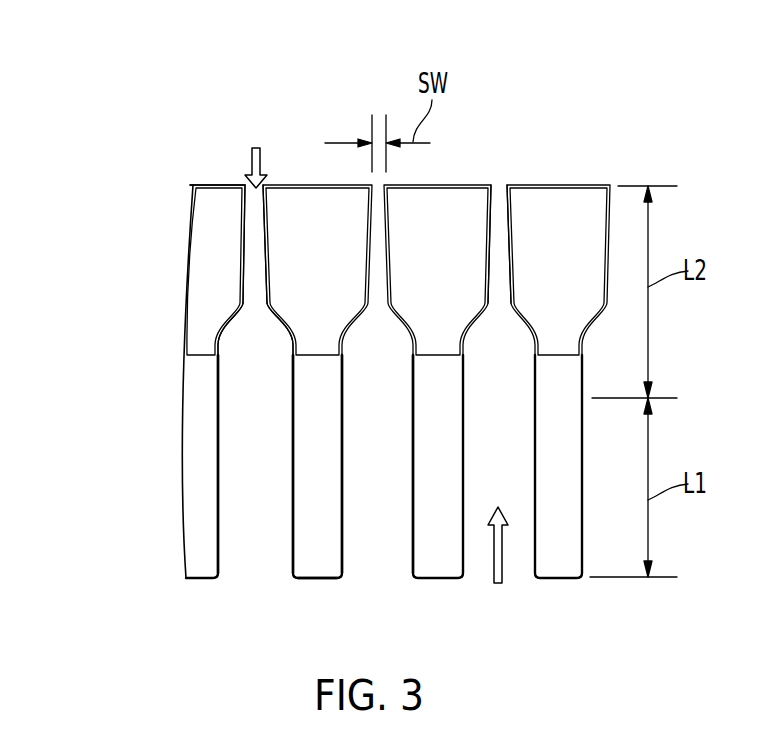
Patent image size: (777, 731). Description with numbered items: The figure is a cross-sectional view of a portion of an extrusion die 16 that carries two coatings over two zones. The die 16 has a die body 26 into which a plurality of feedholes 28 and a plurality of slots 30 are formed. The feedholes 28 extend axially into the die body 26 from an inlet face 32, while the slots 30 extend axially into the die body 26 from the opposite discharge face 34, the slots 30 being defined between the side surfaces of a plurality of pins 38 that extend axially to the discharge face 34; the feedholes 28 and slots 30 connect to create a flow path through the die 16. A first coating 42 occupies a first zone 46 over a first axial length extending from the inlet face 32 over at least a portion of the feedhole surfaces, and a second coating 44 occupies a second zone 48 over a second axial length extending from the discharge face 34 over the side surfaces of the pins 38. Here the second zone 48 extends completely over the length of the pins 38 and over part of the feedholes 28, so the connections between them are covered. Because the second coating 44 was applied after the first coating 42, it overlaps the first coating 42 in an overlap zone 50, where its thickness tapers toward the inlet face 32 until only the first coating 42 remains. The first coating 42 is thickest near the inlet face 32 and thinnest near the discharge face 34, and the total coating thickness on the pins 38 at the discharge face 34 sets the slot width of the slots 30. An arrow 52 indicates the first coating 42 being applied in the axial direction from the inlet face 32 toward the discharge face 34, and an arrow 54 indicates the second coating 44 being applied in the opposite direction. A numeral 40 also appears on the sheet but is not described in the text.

The extrusion die 16 is at (92, 75).
The die body 26 is at (195, 537).
The feedholes 28 is at (385, 560).
The slots 30 is at (501, 176).
The inlet face 32 is at (308, 588).
The discharge face 34 is at (566, 176).
The pins 38 is at (208, 262).
The component 40 is at (167, 725).
The first coating 42 is at (292, 547).
The second coating 44 is at (202, 186).
The first zone 46 is at (262, 483).
The second zone 48 is at (250, 315).
The overlap zone 50 is at (270, 388).
The arrow 52 is at (502, 570).
The arrow 54 is at (257, 147).